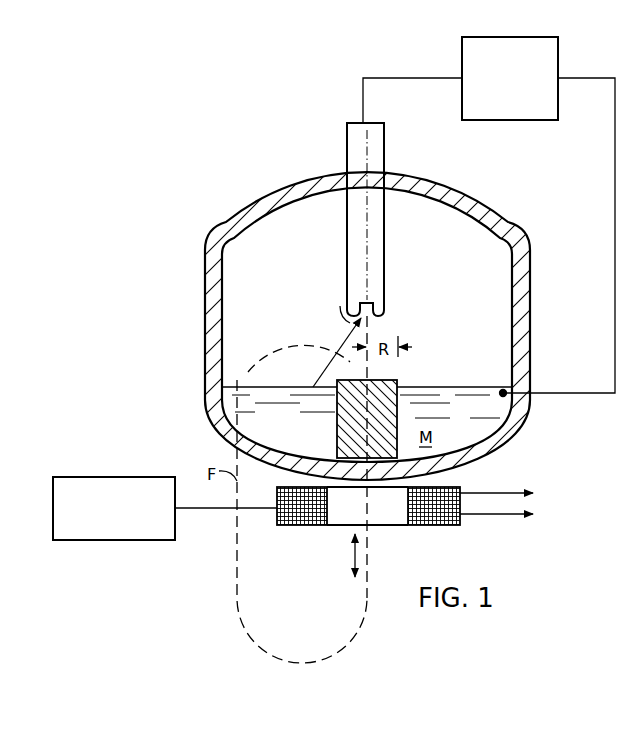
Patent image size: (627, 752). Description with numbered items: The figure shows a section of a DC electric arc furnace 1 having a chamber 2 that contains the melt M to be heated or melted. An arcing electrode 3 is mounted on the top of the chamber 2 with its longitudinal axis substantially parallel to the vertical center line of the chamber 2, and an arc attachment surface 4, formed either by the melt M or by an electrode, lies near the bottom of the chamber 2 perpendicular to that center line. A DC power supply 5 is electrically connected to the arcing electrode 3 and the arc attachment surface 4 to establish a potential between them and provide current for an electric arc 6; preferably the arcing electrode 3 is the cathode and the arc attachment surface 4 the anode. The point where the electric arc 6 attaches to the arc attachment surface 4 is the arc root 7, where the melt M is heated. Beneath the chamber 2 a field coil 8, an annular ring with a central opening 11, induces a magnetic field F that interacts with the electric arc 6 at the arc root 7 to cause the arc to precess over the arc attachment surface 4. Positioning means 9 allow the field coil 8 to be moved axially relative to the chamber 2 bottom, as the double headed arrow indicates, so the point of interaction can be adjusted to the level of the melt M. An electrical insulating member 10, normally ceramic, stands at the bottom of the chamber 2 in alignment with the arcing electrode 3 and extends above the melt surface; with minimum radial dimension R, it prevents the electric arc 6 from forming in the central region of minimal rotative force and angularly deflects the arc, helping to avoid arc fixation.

The DC electric arc furnace 1 is at (273, 150).
The chamber 2 is at (293, 247).
The arcing electrode 3 is at (385, 136).
The arc attachment surface 4 is at (458, 386).
The DC power supply 5 is at (498, 121).
The electric arc 6 is at (346, 331).
The arc root 7 is at (308, 383).
The field coil 8 is at (432, 526).
The positioning means 9 is at (165, 540).
The electrical insulating member 10 is at (380, 380).
The central opening 11 is at (385, 512).